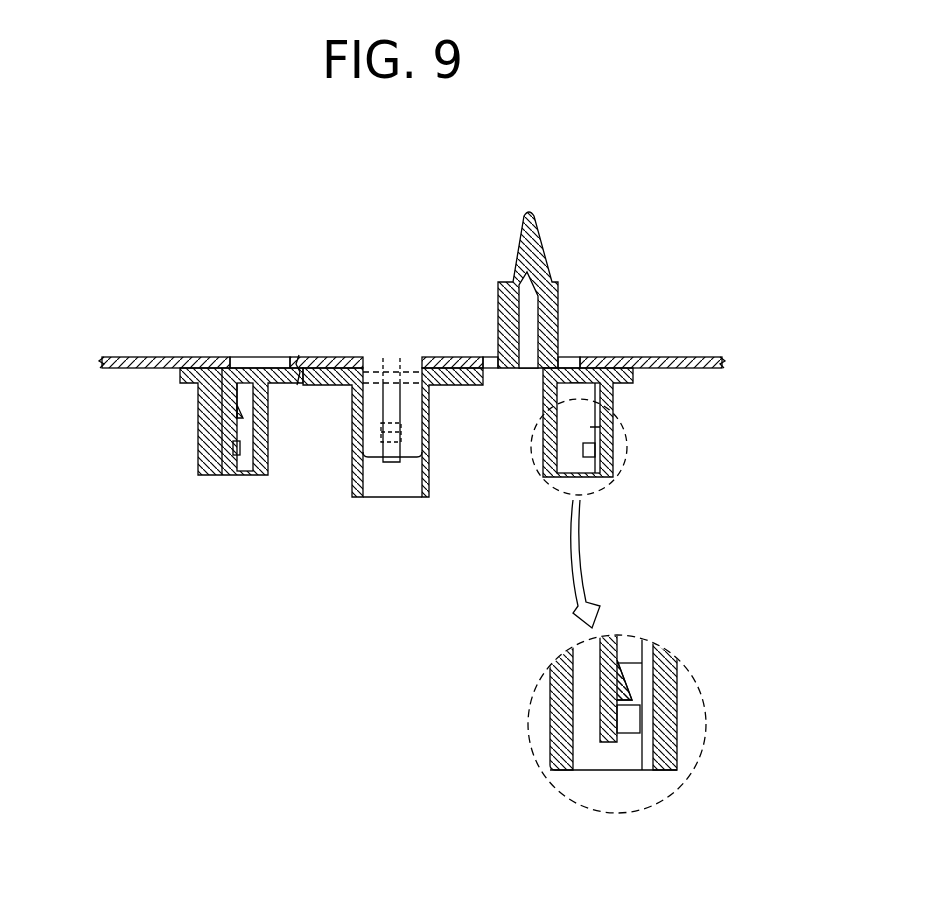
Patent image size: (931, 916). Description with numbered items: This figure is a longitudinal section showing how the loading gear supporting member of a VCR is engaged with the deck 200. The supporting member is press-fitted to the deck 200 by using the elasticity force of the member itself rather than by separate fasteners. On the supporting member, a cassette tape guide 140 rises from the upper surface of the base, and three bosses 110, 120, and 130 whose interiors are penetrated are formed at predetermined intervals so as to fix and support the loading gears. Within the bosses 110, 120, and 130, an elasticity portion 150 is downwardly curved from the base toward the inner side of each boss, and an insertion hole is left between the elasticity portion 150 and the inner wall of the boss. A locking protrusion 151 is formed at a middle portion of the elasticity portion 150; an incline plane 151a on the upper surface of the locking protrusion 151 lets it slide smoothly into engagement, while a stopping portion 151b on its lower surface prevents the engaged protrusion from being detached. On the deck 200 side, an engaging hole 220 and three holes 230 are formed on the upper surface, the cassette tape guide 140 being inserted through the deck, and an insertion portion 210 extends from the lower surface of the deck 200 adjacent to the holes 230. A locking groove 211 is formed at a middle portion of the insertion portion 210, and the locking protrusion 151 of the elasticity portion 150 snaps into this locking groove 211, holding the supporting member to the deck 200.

The deck 200 is at (150, 360).
The holes 230 is at (270, 360).
The engaging hole 220 is at (491, 358).
The insertion portion 210 is at (228, 395).
The locking groove 211 is at (232, 427).
The locking protrusion 151 is at (232, 437).
The incline plane 151a is at (632, 697).
The stopping portion 151b is at (625, 718).
The boss 130 is at (268, 452).
The boss 110 is at (391, 482).
The elasticity portion 150 is at (395, 410).
The cassette tape guide 140 is at (556, 297).
The boss 120 is at (604, 465).